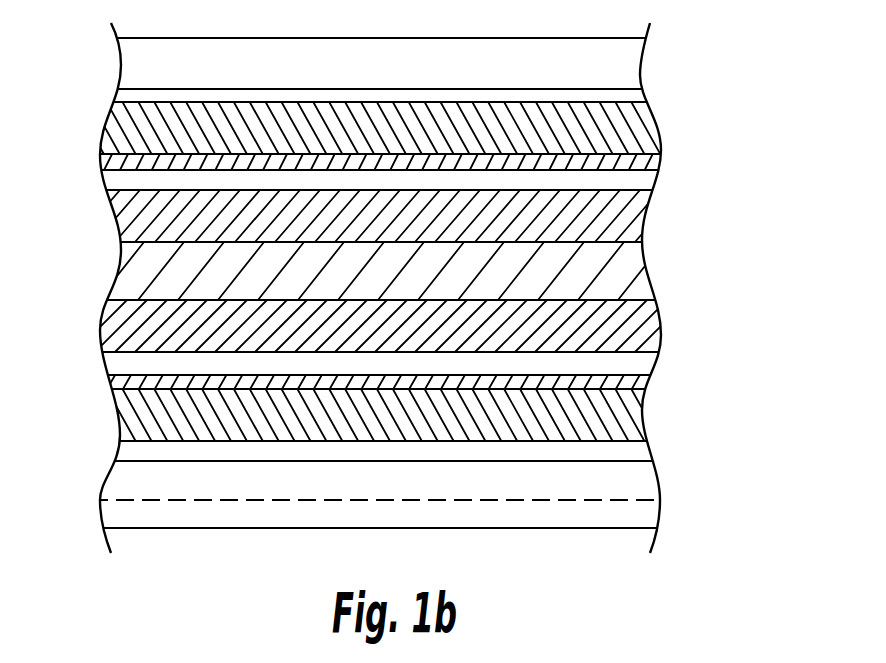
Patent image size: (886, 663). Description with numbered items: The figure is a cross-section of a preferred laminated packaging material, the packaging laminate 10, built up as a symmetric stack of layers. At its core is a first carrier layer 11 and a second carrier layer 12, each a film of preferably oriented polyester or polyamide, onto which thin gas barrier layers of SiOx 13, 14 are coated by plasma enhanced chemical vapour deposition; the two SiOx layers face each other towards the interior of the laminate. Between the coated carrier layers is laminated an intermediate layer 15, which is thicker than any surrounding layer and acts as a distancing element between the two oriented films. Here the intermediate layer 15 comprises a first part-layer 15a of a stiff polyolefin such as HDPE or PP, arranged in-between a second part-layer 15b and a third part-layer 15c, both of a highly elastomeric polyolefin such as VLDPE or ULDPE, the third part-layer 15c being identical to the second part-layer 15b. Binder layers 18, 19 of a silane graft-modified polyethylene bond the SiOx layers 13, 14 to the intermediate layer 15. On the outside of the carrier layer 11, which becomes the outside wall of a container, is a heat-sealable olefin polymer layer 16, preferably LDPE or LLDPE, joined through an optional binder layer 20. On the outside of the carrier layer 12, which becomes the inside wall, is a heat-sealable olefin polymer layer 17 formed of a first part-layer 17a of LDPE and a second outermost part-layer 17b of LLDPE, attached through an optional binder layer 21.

The packaging laminate 10 is at (343, 288).
The heat-sealable olefin polymer layer 16 is at (628, 60).
The binder layer 20 is at (634, 97).
The first carrier layer 11 is at (638, 132).
The gas barrier layer of SiOx 13 is at (650, 163).
The binder layer 18 is at (645, 180).
The intermediate layer 15 is at (408, 271).
The third part-layer 15c is at (627, 222).
The first part-layer 15a is at (627, 278).
The second part-layer 15b is at (627, 318).
The binder layer 19 is at (640, 365).
The gas barrier layer of SiOx 14 is at (640, 388).
The second carrier layer 12 is at (630, 420).
The binder layer 21 is at (634, 450).
The heat-sealable olefin polymer layer 17 is at (446, 504).
The first part-layer 17a is at (642, 487).
The second outermost part-layer 17b is at (645, 517).